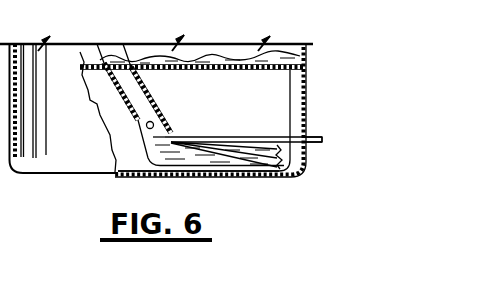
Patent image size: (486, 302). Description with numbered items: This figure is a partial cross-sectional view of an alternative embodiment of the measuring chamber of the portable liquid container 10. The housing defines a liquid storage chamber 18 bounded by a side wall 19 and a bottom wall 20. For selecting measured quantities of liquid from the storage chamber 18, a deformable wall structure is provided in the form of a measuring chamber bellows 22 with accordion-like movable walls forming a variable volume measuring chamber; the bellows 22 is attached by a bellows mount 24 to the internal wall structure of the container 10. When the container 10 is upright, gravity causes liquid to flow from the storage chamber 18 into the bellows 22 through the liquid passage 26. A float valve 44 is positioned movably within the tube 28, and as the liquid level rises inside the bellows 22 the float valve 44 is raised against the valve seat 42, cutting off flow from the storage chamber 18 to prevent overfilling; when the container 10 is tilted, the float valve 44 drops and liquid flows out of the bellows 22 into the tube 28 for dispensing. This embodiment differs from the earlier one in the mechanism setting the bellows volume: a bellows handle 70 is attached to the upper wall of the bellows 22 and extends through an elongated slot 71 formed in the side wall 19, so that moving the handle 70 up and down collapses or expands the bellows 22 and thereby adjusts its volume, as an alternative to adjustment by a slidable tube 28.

The portable liquid container 10 is at (308, 22).
The liquid storage chamber 18 is at (286, 52).
The side wall 19 is at (306, 88).
The bottom wall 20 is at (250, 70).
The measuring chamber bellows 22 is at (182, 145).
The bellows mount 24 is at (203, 175).
The liquid passage 26 is at (320, 167).
The tube 28 is at (95, 48).
The valve seat 42 is at (146, 123).
The float valve 44 is at (145, 140).
The bellows handle 70 is at (322, 137).
The slot 71 is at (322, 147).